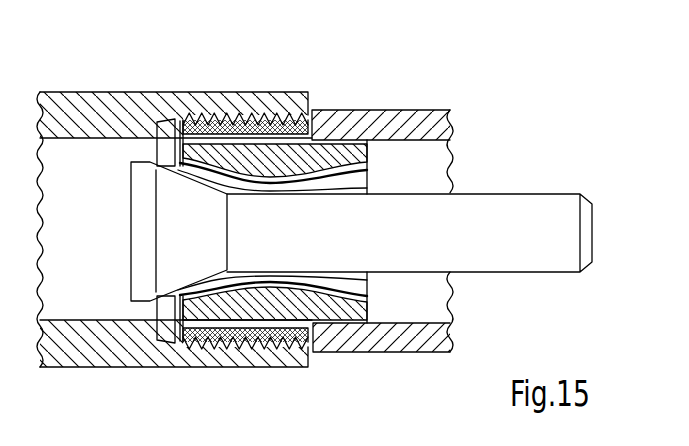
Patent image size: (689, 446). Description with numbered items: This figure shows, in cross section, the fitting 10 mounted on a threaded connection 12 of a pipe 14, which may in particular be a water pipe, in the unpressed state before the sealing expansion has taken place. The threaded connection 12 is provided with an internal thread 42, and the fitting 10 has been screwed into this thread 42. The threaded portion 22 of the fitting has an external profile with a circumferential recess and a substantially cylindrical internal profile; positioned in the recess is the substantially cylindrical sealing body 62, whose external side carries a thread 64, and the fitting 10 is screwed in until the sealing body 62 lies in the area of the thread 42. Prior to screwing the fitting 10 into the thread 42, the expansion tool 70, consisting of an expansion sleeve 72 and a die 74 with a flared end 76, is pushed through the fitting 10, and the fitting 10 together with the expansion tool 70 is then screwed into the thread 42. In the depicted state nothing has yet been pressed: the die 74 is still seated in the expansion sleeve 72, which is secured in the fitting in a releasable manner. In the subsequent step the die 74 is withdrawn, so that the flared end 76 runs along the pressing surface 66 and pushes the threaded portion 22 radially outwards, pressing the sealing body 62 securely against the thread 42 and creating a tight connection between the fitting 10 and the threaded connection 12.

The fitting 10 is at (389, 91).
The threaded connection 12 is at (316, 98).
The pipe 14 is at (75, 110).
The threaded portion 22 is at (278, 141).
The thread 42 is at (217, 345).
The sealing body 62 is at (244, 118).
The thread 64 is at (272, 118).
The pressing surface 66 is at (197, 118).
The expansion tool 70 is at (394, 171).
The expansion sleeve 72 is at (318, 307).
The die 74 is at (499, 255).
The flared end 76 is at (145, 278).